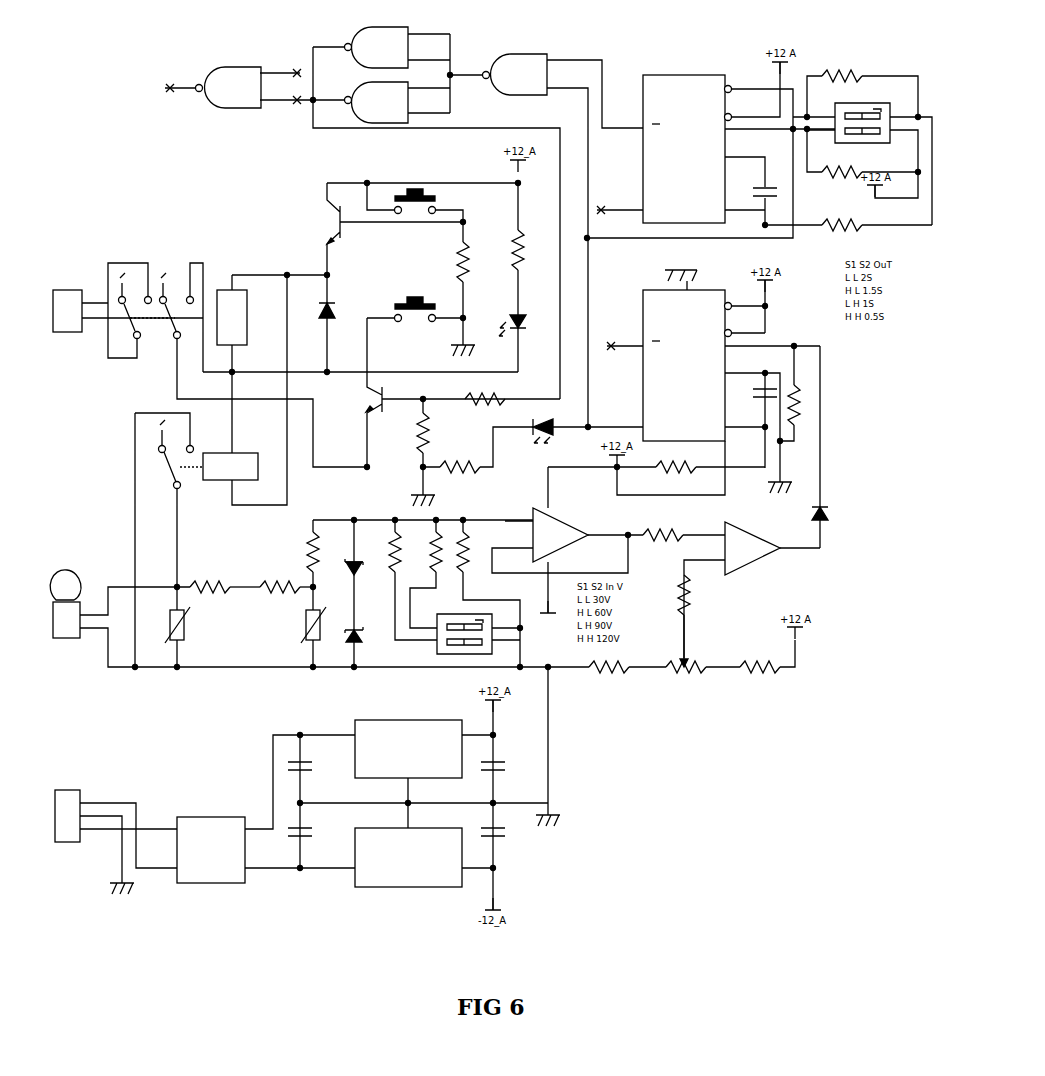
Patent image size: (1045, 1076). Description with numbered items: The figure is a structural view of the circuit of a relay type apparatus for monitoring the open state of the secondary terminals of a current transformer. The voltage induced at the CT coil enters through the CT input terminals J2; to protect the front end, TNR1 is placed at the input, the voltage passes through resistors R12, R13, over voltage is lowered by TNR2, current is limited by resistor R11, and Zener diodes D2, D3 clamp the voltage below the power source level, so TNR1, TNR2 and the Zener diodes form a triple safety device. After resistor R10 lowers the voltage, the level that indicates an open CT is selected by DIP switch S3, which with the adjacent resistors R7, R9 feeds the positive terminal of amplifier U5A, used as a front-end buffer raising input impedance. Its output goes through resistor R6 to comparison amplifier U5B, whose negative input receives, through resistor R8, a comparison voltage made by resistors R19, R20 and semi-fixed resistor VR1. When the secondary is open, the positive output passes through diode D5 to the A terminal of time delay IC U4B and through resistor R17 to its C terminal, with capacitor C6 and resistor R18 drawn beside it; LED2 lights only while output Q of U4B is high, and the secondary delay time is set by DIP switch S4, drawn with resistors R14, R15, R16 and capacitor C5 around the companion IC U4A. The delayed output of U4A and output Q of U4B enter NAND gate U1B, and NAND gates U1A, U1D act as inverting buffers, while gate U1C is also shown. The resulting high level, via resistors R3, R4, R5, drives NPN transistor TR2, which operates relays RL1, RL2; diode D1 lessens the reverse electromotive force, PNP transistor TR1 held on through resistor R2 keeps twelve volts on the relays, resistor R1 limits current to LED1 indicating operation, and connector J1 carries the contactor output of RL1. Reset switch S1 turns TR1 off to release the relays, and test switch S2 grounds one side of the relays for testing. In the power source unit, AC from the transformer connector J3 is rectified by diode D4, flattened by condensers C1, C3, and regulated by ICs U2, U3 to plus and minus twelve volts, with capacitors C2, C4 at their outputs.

The NAND gate U1A is at (381, 40).
The NAND gate U1B is at (554, 232).
The NAND gate U1C is at (239, 78).
The NAND gate U1D is at (381, 96).
The integrated circuit U4A is at (710, 151).
The time delay integrated circuit U4B is at (713, 380).
The amplifier U5A is at (560, 548).
The comparison amplifier U5B is at (752, 540).
The voltage regulator IC U2 is at (416, 755).
The voltage regulator IC U3 is at (416, 853).
The resistor R1 is at (525, 243).
The resistor R2 is at (470, 262).
The resistor R3 is at (485, 394).
The resistor R4 is at (430, 433).
The resistor R5 is at (472, 466).
The resistor R6 is at (656, 529).
The resistor R7 is at (413, 580).
The resistor R8 is at (690, 617).
The resistor R9 is at (432, 574).
The resistor R10 is at (488, 593).
The resistor R11 is at (323, 553).
The resistor R12 is at (225, 582).
The resistor R13 is at (286, 582).
The resistor R14 is at (862, 89).
The resistor R15 is at (862, 154).
The resistor R16 is at (848, 220).
The resistor R17 is at (800, 393).
The resistor R18 is at (656, 468).
The resistor R19 is at (607, 662).
The resistor R20 is at (767, 656).
The semi-fixed resistor VR1 is at (702, 635).
The condenser C1 is at (308, 769).
The capacitor C2 is at (500, 751).
The condenser C3 is at (308, 835).
The capacitor C4 is at (500, 856).
The capacitor C5 is at (760, 184).
The capacitor C6 is at (757, 392).
The diode D1 is at (335, 331).
The Zener diode D2 is at (363, 593).
The Zener diode D3 is at (363, 634).
The diode D4 is at (266, 809).
The diode D5 is at (829, 447).
The light emitting diode LED1 is at (510, 336).
The light emitting diode LED2 is at (583, 427).
The PNP transistor TR1 is at (395, 243).
The NPN transistor TR2 is at (463, 419).
The relay RL1 is at (237, 365).
The relay RL2 is at (211, 471).
The reset switch S1 is at (415, 202).
The test switch S2 is at (421, 332).
The DIP switch S3 is at (473, 634).
The DIP switch S4 is at (862, 157).
The over-voltage protection element TNR1 is at (163, 637).
The over-voltage protection element TNR2 is at (298, 627).
The contactor output connector J1 is at (124, 315).
The CT input terminals J2 is at (295, 618).
The power transformer connector J3 is at (106, 835).